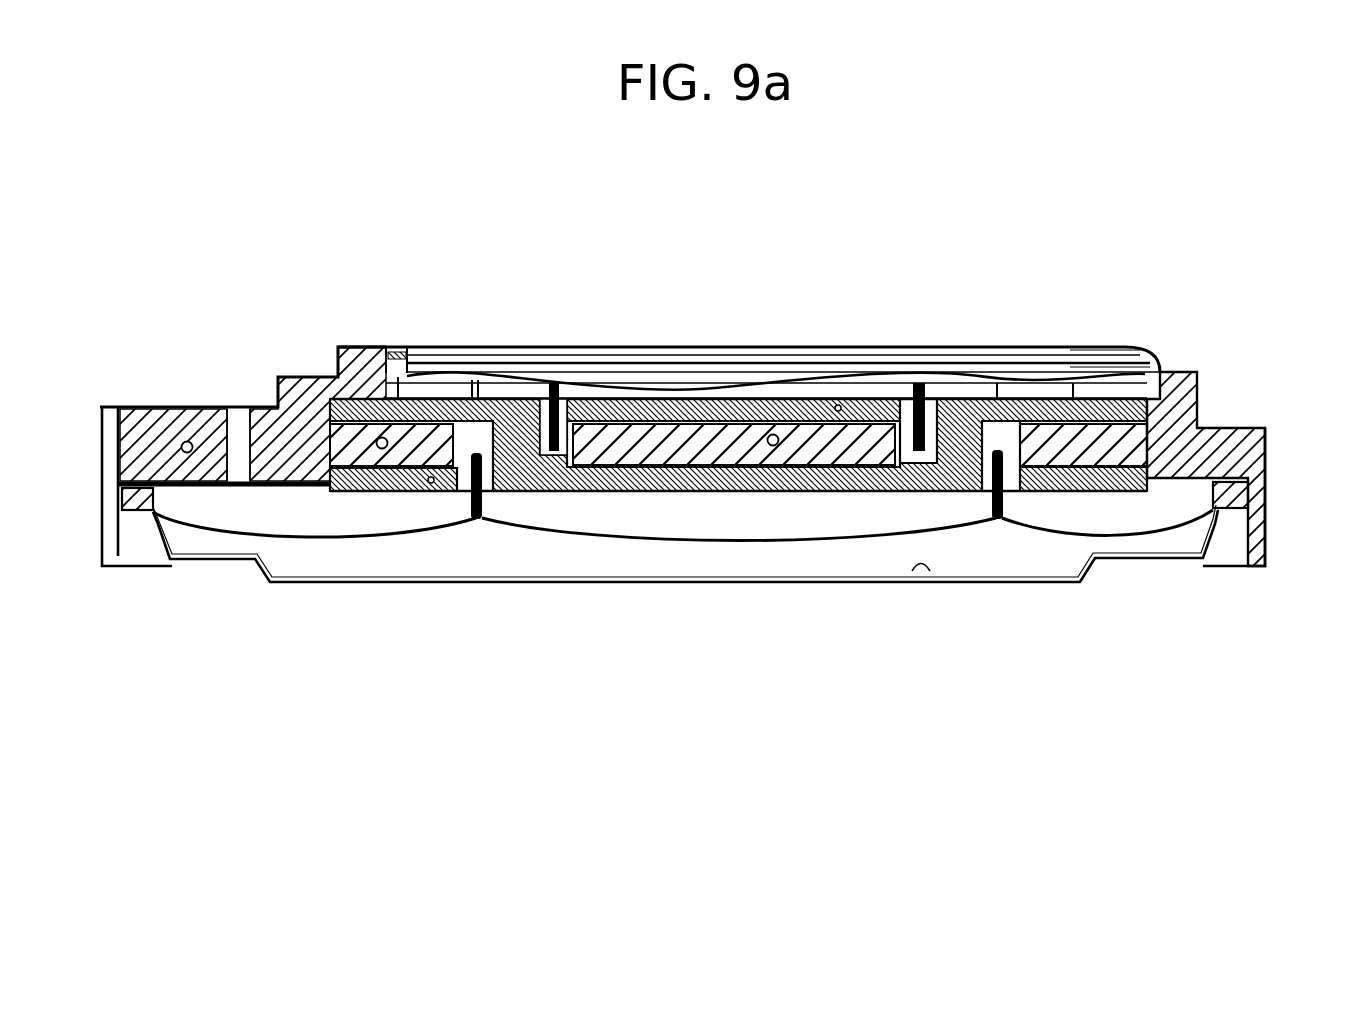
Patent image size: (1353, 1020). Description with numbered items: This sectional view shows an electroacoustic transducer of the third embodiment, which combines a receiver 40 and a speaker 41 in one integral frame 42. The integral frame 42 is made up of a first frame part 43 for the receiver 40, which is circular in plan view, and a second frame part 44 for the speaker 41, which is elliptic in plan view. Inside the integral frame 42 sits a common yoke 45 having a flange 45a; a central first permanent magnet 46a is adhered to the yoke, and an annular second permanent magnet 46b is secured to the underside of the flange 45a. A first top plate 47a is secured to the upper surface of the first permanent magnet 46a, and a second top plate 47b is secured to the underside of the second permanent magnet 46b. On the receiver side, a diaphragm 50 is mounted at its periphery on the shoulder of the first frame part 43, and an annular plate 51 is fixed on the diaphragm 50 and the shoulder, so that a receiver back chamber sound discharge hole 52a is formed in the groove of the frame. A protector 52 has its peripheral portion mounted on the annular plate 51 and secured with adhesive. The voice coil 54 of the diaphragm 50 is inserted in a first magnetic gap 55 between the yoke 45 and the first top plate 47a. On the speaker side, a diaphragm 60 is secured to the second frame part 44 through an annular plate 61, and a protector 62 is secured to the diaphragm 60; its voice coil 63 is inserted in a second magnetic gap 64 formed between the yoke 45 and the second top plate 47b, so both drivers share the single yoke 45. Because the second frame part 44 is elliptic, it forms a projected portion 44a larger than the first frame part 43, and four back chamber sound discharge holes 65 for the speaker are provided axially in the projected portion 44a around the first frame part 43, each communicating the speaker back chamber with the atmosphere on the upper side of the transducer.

The receiver 40 is at (952, 327).
The speaker 41 is at (843, 590).
The integral frame 42 is at (305, 372).
The first frame part 43 is at (1197, 413).
The second frame part 44 is at (183, 441).
The projected portion 44a is at (140, 407).
The common yoke 45 is at (640, 482).
The flange 45a is at (322, 412).
The first permanent magnet 46a is at (771, 434).
The second permanent magnet 46b is at (378, 448).
The first top plate 47a is at (837, 405).
The second top plate 47b is at (430, 483).
The diaphragm 50 is at (587, 372).
The annular plate 51 is at (1165, 363).
The protector 52 is at (628, 352).
The receiver back chamber sound discharge hole 52a is at (1143, 388).
The voice coil 54 is at (900, 372).
The first magnetic gap 55 is at (563, 495).
The diaphragm 60 is at (947, 527).
The annular plate 61 is at (1240, 500).
The protector 62 is at (922, 572).
The voice coil 63 is at (998, 520).
The second magnetic gap 64 is at (466, 498).
The back chamber sound discharge holes 65 is at (238, 420).